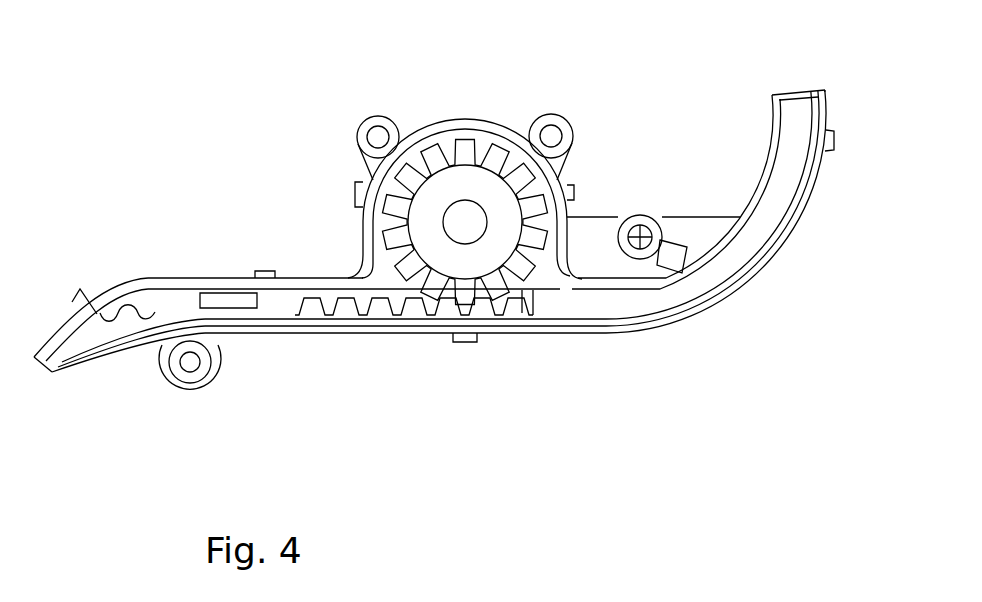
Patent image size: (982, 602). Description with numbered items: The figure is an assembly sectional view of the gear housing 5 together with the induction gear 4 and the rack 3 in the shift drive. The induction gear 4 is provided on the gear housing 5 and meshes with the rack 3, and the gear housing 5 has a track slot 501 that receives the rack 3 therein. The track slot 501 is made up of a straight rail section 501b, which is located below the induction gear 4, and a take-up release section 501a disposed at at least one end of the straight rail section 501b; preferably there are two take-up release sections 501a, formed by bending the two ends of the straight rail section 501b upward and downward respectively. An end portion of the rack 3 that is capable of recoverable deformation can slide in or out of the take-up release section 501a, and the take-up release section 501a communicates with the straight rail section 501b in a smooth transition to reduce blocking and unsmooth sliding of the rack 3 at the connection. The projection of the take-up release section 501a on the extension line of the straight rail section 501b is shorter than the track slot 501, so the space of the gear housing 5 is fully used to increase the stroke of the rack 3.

The rack 3 is at (382, 333).
The induction gear 4 is at (393, 237).
The gear housing 5 is at (765, 168).
The track slot 501 is at (645, 317).
The take-up release section 501a is at (779, 252).
The straight rail section 501b is at (536, 314).